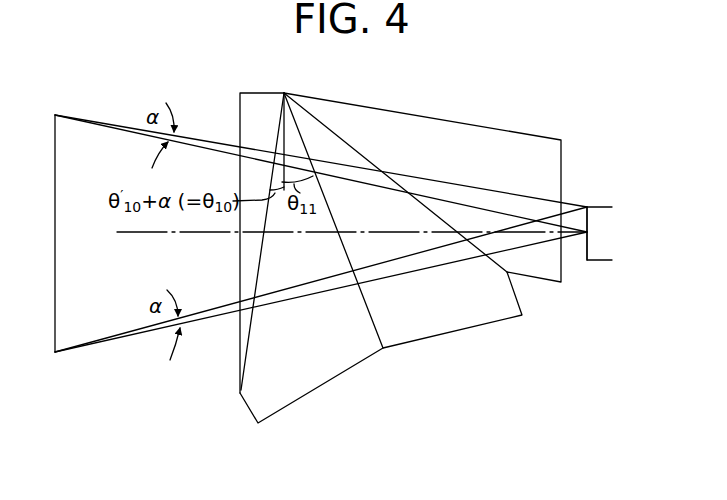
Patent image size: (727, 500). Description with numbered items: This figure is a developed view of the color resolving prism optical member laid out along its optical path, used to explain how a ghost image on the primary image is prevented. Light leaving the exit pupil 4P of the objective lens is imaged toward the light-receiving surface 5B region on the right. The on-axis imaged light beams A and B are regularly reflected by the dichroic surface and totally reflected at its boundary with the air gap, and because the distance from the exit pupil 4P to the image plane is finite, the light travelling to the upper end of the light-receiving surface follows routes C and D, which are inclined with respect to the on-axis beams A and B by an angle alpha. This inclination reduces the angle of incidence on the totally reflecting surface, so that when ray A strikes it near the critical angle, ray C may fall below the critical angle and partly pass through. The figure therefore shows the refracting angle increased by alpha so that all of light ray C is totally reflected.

The exit pupil 4P is at (55, 364).
The image focal region 5B is at (605, 233).
The light ray A is at (413, 275).
The light ray B is at (385, 190).
The light ray C is at (407, 255).
The light ray D is at (447, 182).